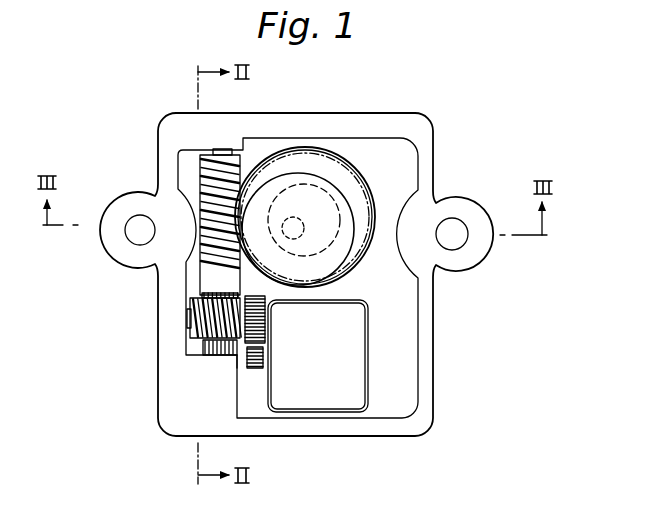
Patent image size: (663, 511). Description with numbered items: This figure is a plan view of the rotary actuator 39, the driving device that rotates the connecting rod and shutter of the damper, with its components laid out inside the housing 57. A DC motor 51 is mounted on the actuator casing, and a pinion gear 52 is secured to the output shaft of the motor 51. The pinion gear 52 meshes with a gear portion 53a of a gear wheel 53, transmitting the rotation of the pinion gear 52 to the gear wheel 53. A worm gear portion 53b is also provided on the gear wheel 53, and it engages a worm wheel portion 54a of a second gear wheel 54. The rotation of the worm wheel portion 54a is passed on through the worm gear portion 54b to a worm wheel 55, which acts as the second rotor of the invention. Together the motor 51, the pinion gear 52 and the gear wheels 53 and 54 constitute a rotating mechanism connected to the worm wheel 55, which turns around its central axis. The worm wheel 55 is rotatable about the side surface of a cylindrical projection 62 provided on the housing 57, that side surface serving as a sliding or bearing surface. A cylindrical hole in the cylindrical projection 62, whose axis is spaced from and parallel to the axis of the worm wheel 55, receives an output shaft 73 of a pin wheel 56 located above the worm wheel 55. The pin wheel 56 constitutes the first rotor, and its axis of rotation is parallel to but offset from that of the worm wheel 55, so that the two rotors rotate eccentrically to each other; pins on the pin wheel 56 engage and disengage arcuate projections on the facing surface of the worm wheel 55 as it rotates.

The rotary actuator 39 is at (458, 350).
The DC motor 51 is at (353, 407).
The pinion gear 52 is at (253, 372).
The gear wheel 53 is at (197, 328).
The gear portion 53a is at (240, 362).
The worm gear portion 53b is at (200, 345).
The gear wheel 54 is at (208, 282).
The worm wheel portion 54a is at (190, 353).
The worm gear portion 54b is at (200, 178).
The worm wheel 55 is at (277, 162).
The pin wheel 56 is at (335, 188).
The housing 57 is at (437, 407).
The cylindrical projection 62 is at (292, 228).
The output shaft 73 is at (300, 222).